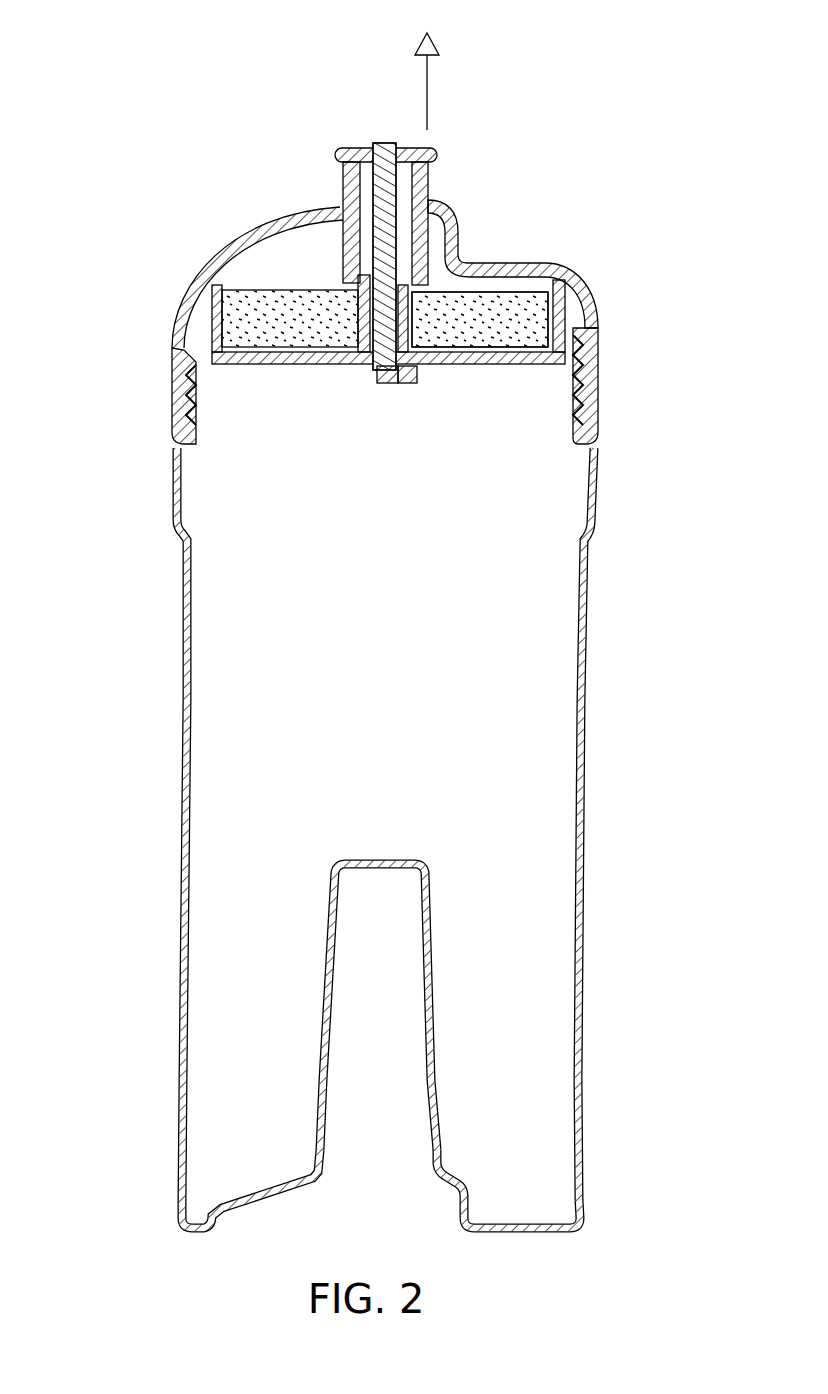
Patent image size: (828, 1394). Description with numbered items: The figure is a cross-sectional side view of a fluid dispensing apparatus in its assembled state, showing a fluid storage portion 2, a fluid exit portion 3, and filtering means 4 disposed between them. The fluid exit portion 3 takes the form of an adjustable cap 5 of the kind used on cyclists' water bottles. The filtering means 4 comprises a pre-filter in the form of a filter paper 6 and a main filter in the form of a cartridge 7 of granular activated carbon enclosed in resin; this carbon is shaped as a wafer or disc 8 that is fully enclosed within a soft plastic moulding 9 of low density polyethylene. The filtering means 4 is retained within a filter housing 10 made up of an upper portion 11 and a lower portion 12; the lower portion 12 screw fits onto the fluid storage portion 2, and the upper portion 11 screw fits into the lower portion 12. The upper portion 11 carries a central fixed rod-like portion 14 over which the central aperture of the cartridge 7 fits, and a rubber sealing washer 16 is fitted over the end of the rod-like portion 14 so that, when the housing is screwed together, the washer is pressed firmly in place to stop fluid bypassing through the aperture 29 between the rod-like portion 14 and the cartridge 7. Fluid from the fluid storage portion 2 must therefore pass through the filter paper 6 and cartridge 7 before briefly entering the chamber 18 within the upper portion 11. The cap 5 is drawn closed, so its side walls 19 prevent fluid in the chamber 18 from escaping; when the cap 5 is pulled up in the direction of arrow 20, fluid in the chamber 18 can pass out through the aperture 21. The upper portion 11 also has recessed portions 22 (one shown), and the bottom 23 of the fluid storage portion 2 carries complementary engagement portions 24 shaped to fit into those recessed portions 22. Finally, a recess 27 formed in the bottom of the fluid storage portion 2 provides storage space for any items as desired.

The fluid storage portion 2 is at (588, 578).
The fluid exit portion 3 is at (447, 190).
The filtering means 4 is at (601, 284).
The adjustable cap 5 is at (423, 150).
The filter paper 6 is at (286, 357).
The cartridge 7 is at (525, 325).
The wafer or disc 8 is at (279, 328).
The soft plastic moulding 9 is at (523, 286).
The filter housing 10 is at (155, 306).
The upper portion 11 is at (242, 242).
The lower portion 12 is at (597, 392).
The rod-like portion 14 is at (388, 146).
The rubber sealing washer 16 is at (367, 366).
The chamber 18 is at (303, 250).
The side walls 19 is at (343, 180).
The arrow 20 is at (426, 67).
The aperture 21 is at (366, 168).
The recessed portions 22 is at (492, 270).
The bottom 23 is at (176, 1200).
The engagement portions 24 is at (464, 1222).
The recess 27 is at (364, 1128).
The aperture 29 is at (420, 378).